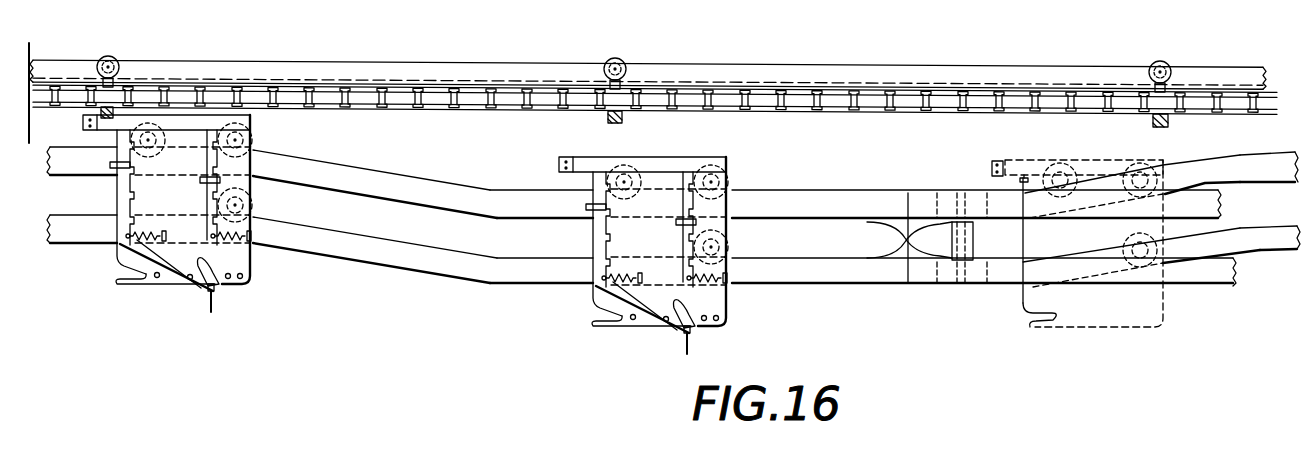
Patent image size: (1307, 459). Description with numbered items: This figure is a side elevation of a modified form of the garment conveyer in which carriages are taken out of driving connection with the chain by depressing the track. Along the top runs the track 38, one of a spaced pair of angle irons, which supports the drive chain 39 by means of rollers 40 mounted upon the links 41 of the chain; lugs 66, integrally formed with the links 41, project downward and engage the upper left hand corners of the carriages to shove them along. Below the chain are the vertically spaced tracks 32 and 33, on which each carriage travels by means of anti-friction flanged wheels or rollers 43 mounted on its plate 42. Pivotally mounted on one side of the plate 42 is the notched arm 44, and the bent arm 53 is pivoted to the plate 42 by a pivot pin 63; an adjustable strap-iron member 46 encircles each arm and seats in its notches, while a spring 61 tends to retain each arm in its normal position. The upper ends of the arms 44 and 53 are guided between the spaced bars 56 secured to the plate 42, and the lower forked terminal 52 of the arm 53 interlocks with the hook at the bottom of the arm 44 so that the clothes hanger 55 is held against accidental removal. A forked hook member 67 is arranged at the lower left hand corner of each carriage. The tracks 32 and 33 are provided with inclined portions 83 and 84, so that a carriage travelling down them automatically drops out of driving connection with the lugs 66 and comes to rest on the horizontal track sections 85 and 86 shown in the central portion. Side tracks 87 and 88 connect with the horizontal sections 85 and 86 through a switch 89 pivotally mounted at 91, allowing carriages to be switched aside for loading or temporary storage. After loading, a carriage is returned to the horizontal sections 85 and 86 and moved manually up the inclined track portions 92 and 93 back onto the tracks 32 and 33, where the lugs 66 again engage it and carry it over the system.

The track 32 is at (60, 150).
The track 33 is at (62, 243).
The track 38 is at (465, 59).
The drive chain 39 is at (253, 85).
The roller 40 is at (110, 57).
The link 41 is at (114, 86).
The plate 42 is at (1097, 330).
The flanged wheel 43 is at (1124, 245).
The arm 44 is at (215, 205).
The member 46 is at (206, 180).
The lower forked terminal 52 is at (205, 290).
The arm 53 is at (128, 201).
The clothes hanger 55 is at (215, 312).
The spaced bar 56 is at (1011, 160).
The spring 61 is at (150, 235).
The pivot pin 63 is at (182, 285).
The lug 66 is at (106, 106).
The hook member 67 is at (1029, 327).
The inclined portion 83 is at (386, 173).
The inclined portion 84 is at (353, 265).
The horizontal track section 85 is at (521, 191).
The horizontal track section 86 is at (526, 290).
The side track 87 is at (1208, 205).
The side track 88 is at (1224, 282).
The switch 89 is at (926, 243).
The pivot 91 is at (968, 193).
The inclined track portion 92 is at (1219, 165).
The inclined track portion 93 is at (1200, 247).